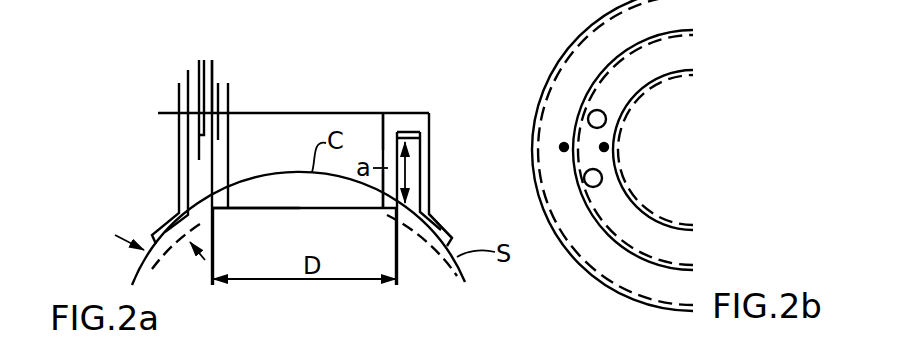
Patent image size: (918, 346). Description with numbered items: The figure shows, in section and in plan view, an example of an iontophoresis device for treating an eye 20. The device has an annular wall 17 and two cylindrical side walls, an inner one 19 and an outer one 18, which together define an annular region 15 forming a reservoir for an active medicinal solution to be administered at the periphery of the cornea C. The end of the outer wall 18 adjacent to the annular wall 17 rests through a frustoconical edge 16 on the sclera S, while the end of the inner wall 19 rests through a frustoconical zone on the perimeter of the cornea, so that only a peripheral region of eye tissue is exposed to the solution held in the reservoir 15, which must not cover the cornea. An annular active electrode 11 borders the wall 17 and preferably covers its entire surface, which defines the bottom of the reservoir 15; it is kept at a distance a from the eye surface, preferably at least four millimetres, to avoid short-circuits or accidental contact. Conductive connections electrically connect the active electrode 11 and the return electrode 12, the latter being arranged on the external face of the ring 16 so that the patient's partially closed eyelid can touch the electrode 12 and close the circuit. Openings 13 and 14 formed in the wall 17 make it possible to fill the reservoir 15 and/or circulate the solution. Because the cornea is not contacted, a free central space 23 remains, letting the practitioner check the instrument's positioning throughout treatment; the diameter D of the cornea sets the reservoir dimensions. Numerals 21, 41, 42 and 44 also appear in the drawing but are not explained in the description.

In FIG. 2A, the active electrode 11 is at (430, 133).
In FIG. 2B, the active electrode 11 is at (595, 77).
In FIG. 2A, the return electrode 12 is at (163, 217).
In FIG. 2B, the return electrode 12 is at (580, 263).
In FIG. 2A, the opening 13 is at (193, 70).
In FIG. 2B, the opening 13 is at (602, 178).
In FIG. 2A, the opening 14 is at (209, 70).
In FIG. 2B, the opening 14 is at (606, 119).
In FIG. 2A, the annular region 15 is at (412, 172).
In FIG. 2A, the frustoconical edge 16 is at (443, 223).
In FIG. 2A, the annular wall 17 is at (408, 122).
In FIG. 2A, the outer cylindrical side wall 18 is at (432, 152).
In FIG. 2A, the inner cylindrical side wall 19 is at (390, 140).
In FIG. 2A, the eye 20 is at (468, 283).
In FIG. 2A, the bottom face 21 is at (268, 210).
In FIG. 2A, the central space 23 is at (283, 134).
In FIG. 2B, the element 41 is at (590, 345).
In FIG. 2B, the element 42 is at (715, 345).
In FIG. 2B, the element 44 is at (627, 345).